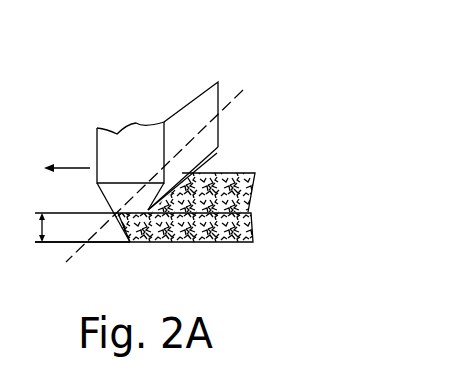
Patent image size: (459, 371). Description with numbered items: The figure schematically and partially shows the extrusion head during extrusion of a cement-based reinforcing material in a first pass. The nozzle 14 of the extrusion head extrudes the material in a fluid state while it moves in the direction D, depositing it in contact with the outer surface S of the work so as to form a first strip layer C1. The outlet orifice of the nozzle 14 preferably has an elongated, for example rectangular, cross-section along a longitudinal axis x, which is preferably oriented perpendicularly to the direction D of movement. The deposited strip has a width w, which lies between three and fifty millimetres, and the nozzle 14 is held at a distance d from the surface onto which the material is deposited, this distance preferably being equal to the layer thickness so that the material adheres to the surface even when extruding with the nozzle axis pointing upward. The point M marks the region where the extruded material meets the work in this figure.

The nozzle 14 is at (118, 142).
The direction of nozzle movement D is at (68, 168).
The longitudinal axis x is at (226, 105).
The width of the strips w is at (271, 181).
The distance of the nozzle from the surface d is at (31, 228).
The outer surface of the work S is at (52, 241).
The material / blade tip point M is at (126, 242).
The first strip layer C1 is at (189, 242).